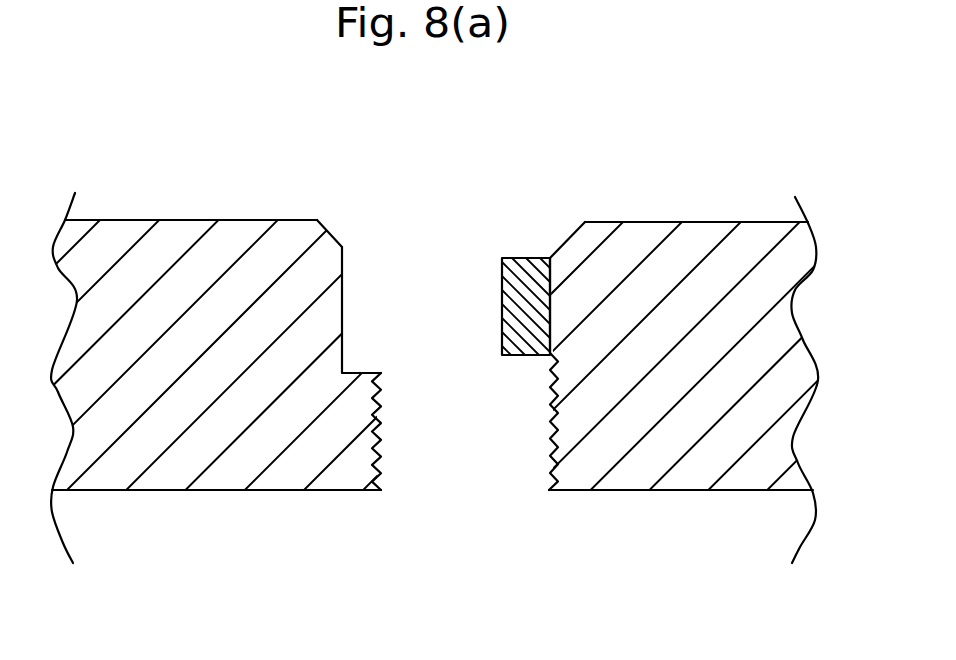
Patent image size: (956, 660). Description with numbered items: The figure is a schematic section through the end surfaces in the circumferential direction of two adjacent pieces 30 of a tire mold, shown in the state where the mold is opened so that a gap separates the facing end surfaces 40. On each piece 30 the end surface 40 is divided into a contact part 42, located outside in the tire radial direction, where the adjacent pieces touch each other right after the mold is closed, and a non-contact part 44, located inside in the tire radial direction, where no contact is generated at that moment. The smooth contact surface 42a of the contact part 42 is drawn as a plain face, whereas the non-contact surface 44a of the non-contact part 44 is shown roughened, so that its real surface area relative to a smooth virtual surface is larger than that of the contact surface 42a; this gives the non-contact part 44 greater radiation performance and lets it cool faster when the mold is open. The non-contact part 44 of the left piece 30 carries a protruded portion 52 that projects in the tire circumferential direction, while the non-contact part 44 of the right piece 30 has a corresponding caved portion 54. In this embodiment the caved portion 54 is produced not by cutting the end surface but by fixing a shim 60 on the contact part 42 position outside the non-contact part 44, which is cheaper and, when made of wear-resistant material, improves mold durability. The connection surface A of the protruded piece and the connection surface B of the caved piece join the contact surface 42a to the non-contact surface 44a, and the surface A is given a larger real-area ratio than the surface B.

The piece 30 is at (158, 470).
The end surface in the circumferential direction 40 is at (498, 387).
The contact part 42 is at (334, 232).
The contact surface 42a is at (343, 294).
The non-contact part 44 is at (360, 468).
The non-contact surface 44a is at (382, 438).
The protruded portion 52 is at (375, 494).
The caved portion 54 is at (568, 494).
The shim 60 is at (518, 258).
The connection surface A is at (372, 368).
The connection surface B is at (523, 358).